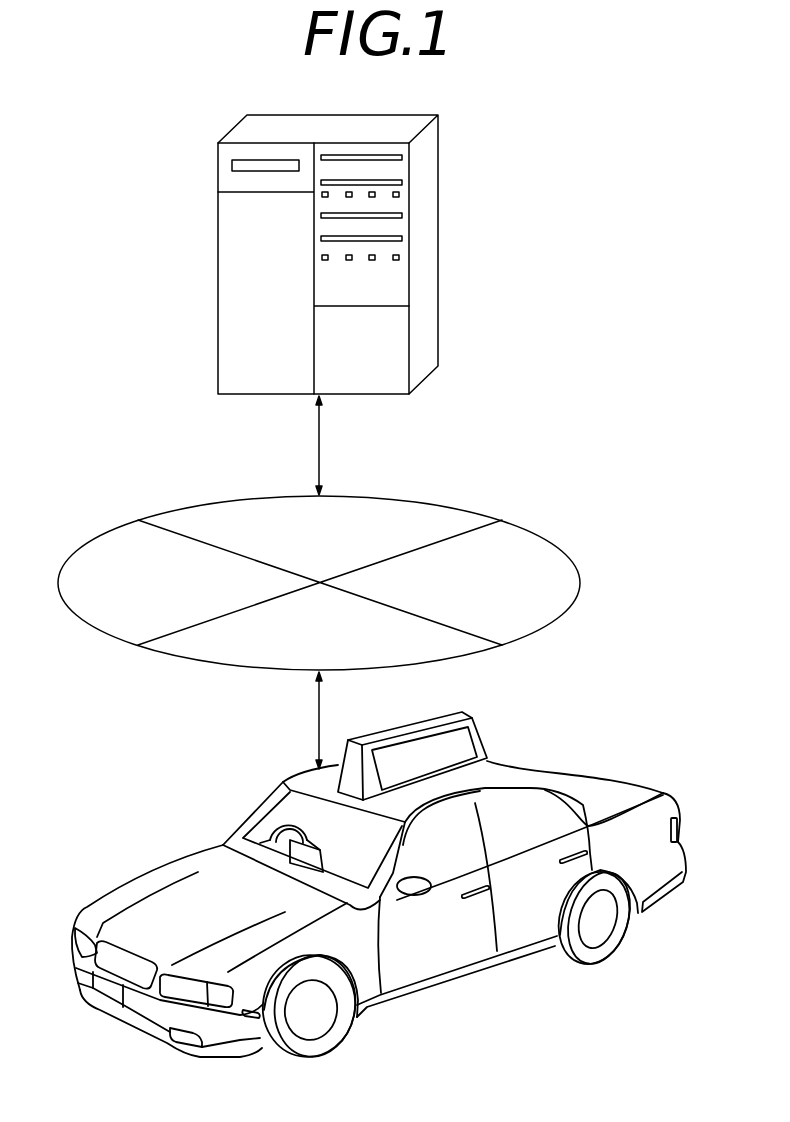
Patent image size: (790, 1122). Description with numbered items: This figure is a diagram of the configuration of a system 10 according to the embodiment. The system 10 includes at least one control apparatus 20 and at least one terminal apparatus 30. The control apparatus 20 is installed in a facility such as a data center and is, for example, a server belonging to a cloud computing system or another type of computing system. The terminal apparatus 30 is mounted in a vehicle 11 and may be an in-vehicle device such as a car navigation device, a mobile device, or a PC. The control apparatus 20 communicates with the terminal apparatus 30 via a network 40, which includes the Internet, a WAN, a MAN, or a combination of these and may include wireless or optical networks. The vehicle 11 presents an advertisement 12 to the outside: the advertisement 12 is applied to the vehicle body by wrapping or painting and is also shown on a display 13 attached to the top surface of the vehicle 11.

The system 10 is at (661, 274).
The control apparatus 20 is at (218, 268).
The network 40 is at (580, 565).
The vehicle 11 is at (160, 867).
The advertisement 12 is at (468, 752).
The display 13 is at (465, 713).
The terminal apparatus 30 is at (328, 865).